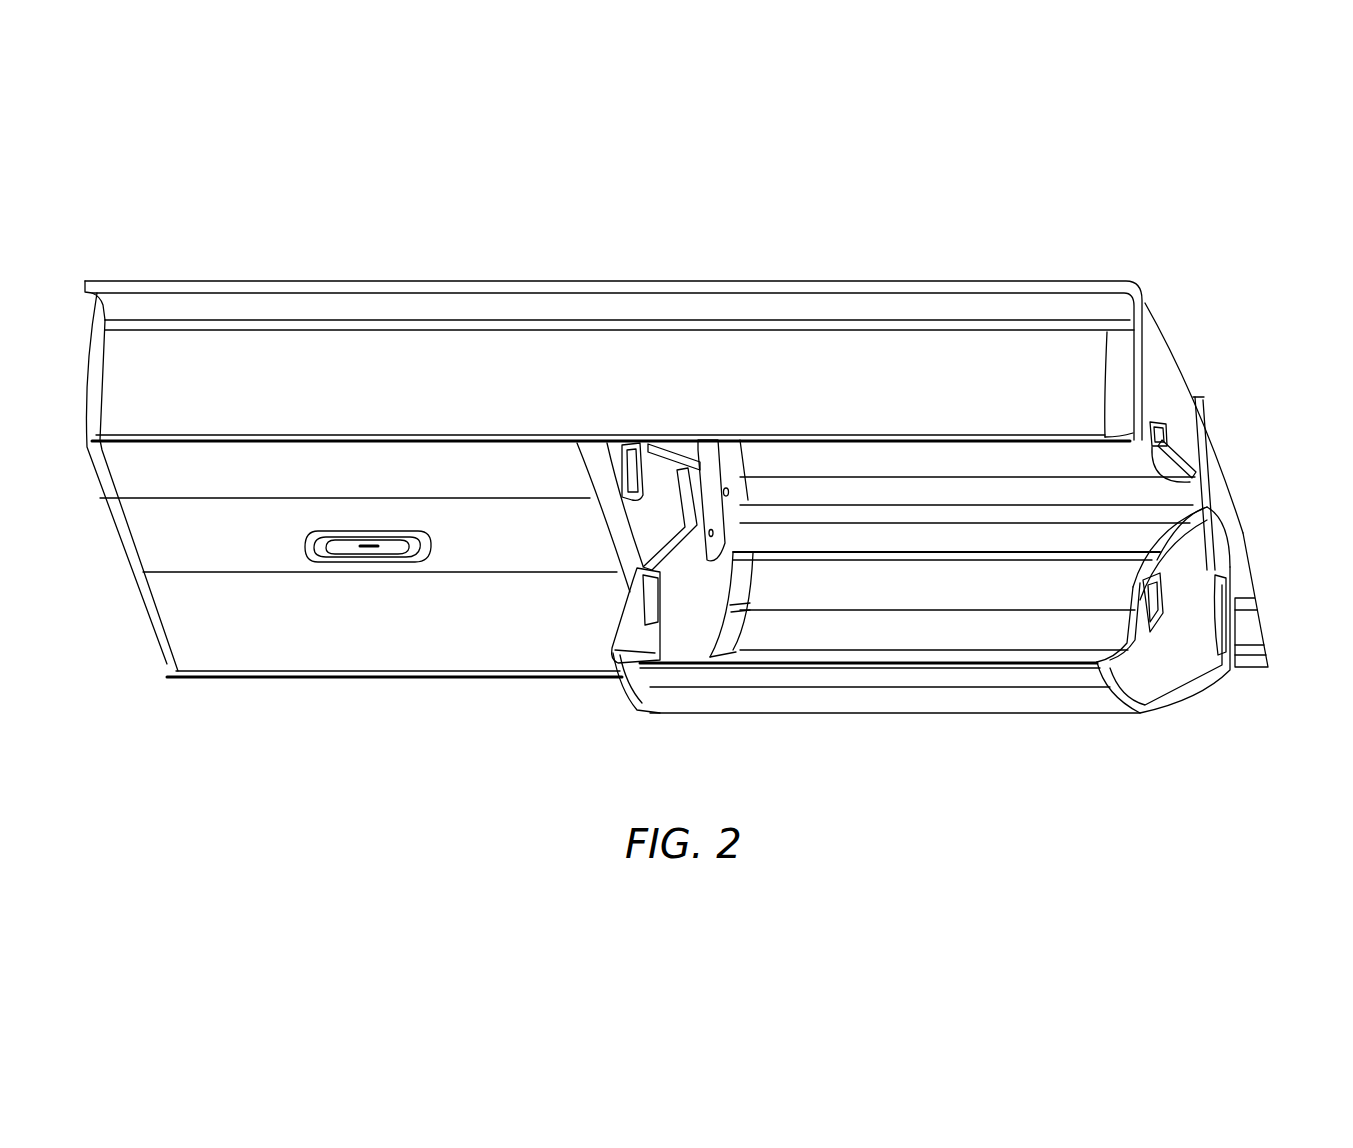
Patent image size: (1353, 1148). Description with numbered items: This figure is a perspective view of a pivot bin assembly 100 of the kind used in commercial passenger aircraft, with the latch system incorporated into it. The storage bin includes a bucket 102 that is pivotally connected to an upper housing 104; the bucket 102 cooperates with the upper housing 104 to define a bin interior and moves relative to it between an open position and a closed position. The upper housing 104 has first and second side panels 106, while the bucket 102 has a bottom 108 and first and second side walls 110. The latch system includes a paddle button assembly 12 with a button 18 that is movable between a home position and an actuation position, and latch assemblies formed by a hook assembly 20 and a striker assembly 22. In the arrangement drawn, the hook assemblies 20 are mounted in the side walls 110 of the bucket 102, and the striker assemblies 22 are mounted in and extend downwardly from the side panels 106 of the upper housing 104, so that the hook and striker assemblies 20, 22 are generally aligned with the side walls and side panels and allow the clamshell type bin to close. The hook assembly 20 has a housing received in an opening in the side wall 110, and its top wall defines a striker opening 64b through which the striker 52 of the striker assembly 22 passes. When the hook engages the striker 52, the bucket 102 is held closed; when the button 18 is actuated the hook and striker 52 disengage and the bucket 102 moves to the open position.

The pivot bin assembly 100 is at (704, 510).
The paddle button assembly 12 is at (417, 586).
The button 18 is at (391, 548).
The hook assembly 20 is at (657, 590).
The striker assembly 22 is at (672, 445).
The striker 52 is at (1178, 480).
The striker opening 64b is at (1175, 530).
The bucket 102 is at (536, 652).
The upper housing 104 is at (1163, 321).
The side panel 106 is at (690, 447).
The bottom 108 is at (856, 705).
The side wall 110 is at (693, 640).